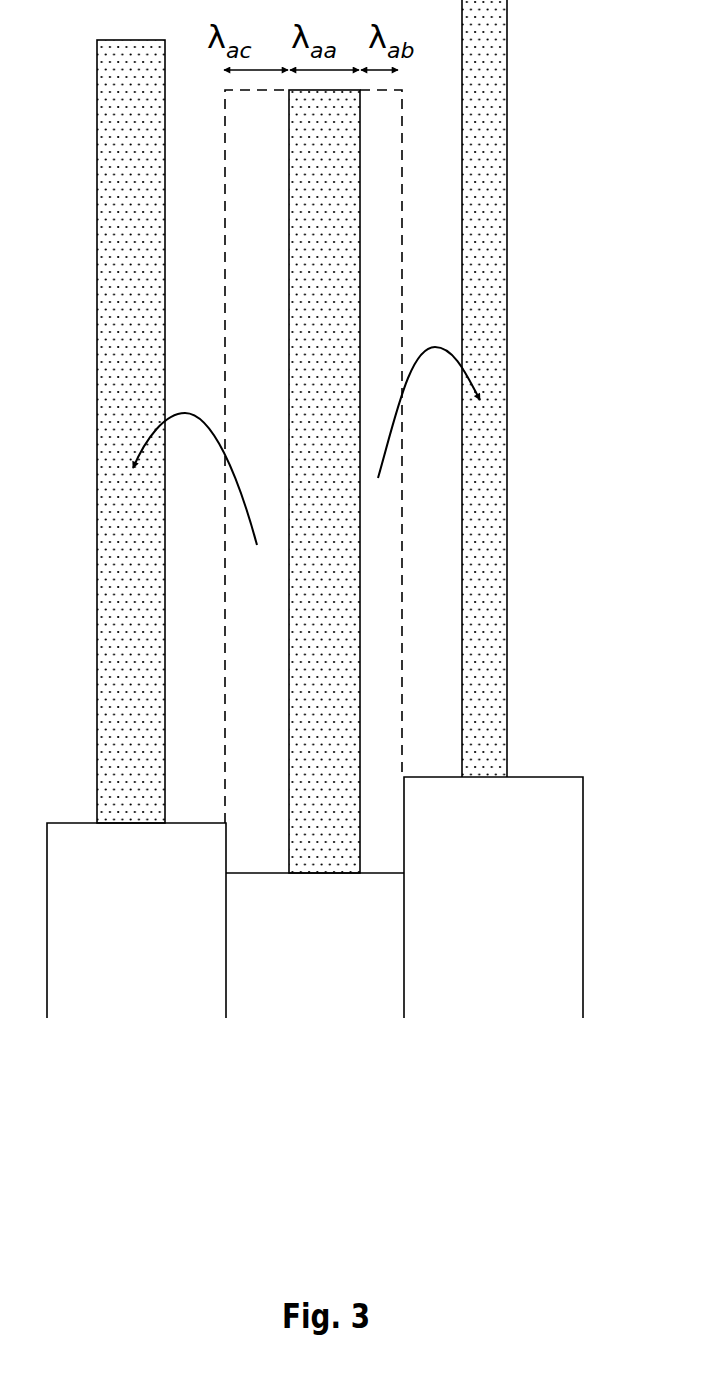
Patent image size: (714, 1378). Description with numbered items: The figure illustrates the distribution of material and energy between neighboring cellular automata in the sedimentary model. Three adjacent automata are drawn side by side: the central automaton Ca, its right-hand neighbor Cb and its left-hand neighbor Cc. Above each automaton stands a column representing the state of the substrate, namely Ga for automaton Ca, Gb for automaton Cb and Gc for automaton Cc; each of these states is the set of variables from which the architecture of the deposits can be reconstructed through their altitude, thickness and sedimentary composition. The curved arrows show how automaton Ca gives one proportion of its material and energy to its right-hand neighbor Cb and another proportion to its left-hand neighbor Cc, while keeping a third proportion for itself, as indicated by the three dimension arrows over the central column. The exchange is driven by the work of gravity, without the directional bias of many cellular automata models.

The state of the substrate in automaton Ca Ga is at (315, 526).
The state of the substrate in automaton Cb Gb is at (493, 509).
The state of the substrate in automaton Cc Gc is at (136, 529).
The automaton Ca is at (317, 1149).
The right-hand neighbor automaton Cb is at (497, 1149).
The left-hand neighbor automaton Cc is at (140, 1149).